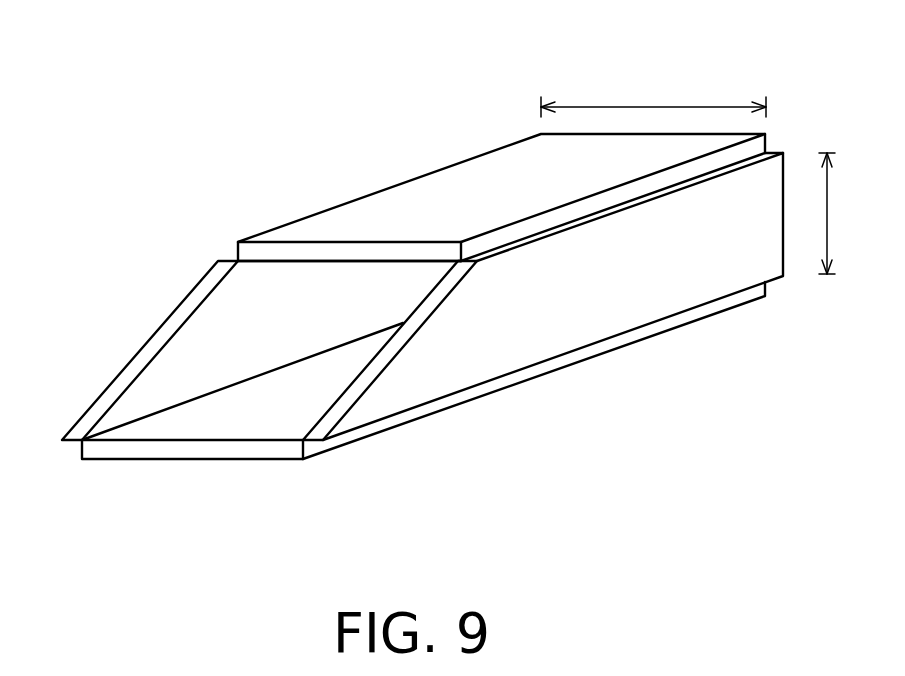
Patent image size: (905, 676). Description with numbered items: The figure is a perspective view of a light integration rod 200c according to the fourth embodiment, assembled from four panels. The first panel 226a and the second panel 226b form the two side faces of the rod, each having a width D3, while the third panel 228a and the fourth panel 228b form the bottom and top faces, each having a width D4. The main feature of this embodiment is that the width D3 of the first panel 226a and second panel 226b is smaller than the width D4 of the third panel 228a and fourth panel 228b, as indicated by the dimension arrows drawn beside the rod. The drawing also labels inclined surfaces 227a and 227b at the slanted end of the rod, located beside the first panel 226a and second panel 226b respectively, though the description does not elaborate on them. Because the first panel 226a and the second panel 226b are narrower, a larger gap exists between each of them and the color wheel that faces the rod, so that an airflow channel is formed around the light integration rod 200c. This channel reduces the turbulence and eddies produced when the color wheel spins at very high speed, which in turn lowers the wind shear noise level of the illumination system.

The light guide element 200c is at (820, 517).
The first panel 226a is at (145, 393).
The second panel 226b is at (582, 322).
The first inclined side surface 227a is at (172, 323).
The second inclined side surface 227b is at (378, 364).
The third panel 228a is at (255, 447).
The fourth panel 228b is at (460, 187).
The width D3 is at (843, 213).
The width D4 is at (653, 92).